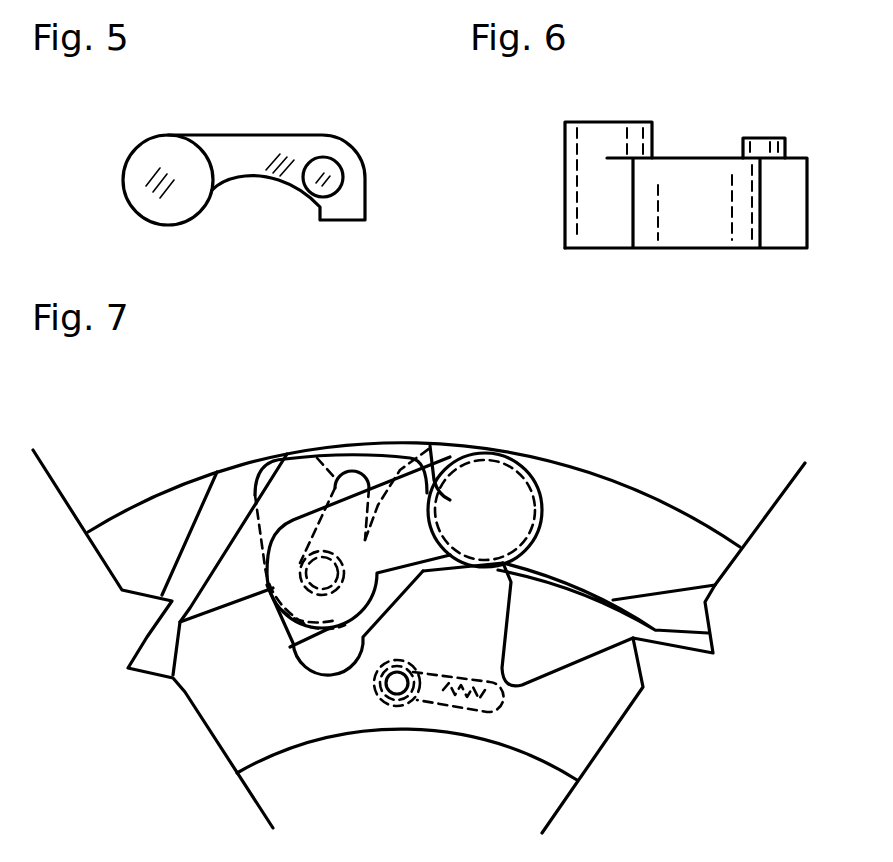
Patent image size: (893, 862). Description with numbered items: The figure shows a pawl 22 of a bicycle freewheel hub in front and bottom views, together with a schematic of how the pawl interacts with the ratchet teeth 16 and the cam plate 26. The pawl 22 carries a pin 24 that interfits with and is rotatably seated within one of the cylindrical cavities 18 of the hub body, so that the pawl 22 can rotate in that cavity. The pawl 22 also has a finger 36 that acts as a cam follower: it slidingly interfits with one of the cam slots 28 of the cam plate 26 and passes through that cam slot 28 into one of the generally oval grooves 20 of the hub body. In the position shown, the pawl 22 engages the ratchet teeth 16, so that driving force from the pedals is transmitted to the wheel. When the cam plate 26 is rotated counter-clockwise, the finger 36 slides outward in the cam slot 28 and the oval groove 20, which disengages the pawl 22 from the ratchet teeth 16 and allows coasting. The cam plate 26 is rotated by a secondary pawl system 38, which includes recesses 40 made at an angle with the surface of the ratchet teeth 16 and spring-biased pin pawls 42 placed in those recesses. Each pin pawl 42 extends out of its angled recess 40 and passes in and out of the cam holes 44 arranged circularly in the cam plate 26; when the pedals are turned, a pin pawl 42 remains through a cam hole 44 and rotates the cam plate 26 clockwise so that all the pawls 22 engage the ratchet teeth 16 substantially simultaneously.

In FIG. 7, the ratchet teeth 16 is at (513, 585).
In FIG. 7, the cylindrical cavity 18 is at (520, 463).
In FIG. 7, the oval groove 20 is at (283, 455).
In FIG. 5, the pawl 22 is at (253, 133).
In FIG. 6, the pawl 22 is at (687, 160).
In FIG. 7, the pawl 22 is at (388, 490).
In FIG. 5, the pin 24 is at (163, 133).
In FIG. 6, the pin 24 is at (593, 120).
In FIG. 7, the pin 24 is at (478, 453).
In FIG. 7, the cam plate 26 is at (237, 517).
In FIG. 7, the cam slot 28 is at (355, 475).
In FIG. 5, the finger 36 is at (343, 163).
In FIG. 6, the finger 36 is at (780, 137).
In FIG. 7, the finger 36 is at (322, 596).
In FIG. 7, the secondary pawl system 38 is at (451, 736).
In FIG. 7, the recess 40 is at (480, 713).
In FIG. 7, the pin pawl 42 is at (393, 700).
In FIG. 7, the cam hole 44 is at (383, 704).